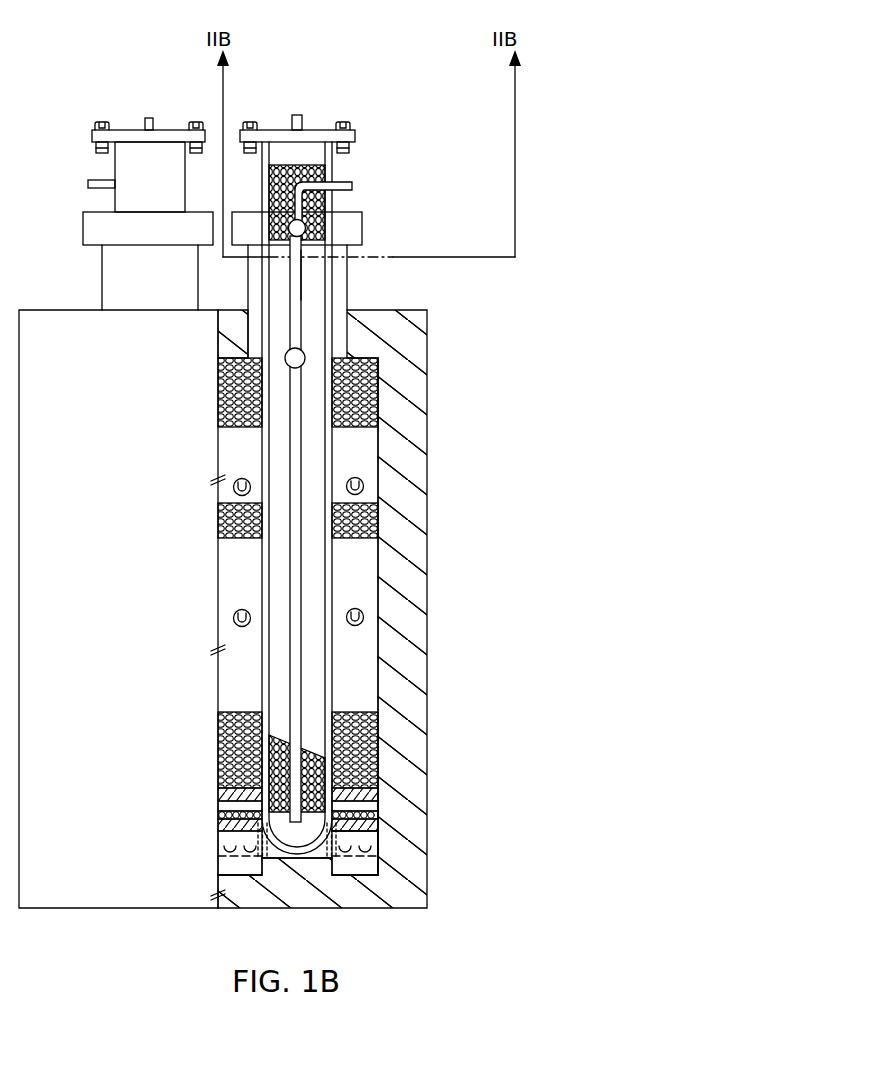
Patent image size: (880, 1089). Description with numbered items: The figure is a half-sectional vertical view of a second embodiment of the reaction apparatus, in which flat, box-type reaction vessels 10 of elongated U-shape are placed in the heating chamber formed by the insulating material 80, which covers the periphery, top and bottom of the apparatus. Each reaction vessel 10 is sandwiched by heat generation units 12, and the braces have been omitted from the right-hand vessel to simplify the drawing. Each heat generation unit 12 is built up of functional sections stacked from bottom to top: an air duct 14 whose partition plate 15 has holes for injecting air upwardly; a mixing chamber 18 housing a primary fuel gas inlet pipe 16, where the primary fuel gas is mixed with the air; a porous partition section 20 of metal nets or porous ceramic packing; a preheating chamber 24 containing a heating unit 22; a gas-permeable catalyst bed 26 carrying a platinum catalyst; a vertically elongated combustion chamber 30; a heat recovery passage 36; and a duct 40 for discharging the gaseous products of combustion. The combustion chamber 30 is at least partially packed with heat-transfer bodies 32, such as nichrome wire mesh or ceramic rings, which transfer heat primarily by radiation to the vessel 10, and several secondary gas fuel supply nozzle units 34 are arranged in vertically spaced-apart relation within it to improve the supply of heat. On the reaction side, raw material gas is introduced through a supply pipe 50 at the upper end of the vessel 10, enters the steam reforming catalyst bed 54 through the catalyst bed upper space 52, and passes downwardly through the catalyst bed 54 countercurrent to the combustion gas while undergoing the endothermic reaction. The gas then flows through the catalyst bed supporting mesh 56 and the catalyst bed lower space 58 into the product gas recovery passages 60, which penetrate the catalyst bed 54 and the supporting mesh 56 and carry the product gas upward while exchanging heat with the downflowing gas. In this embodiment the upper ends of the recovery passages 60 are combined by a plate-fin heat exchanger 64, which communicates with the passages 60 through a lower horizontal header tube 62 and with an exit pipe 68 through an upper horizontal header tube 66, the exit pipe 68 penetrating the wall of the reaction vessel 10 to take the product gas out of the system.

The reaction vessel 10 is at (333, 432).
The heat generation unit 12 is at (237, 573).
The air duct 14 is at (338, 860).
The partition plate 15 is at (227, 877).
The primary fuel gas inlet pipe 16 is at (370, 838).
The mixing chamber 18 is at (377, 838).
The porous partition section 20 is at (375, 824).
The heating unit 22 is at (375, 815).
The preheating chamber 24 is at (375, 805).
The gas-permeable catalyst bed 26 is at (372, 795).
The combustion chamber 30 is at (272, 683).
The heat-transfer bodies 32 is at (338, 372).
The secondary gas fuel supply nozzle unit 34 is at (233, 488).
The heat recovery passage 36 is at (348, 296).
The duct for discharging gaseous products of combustion 40 is at (362, 234).
The supply pipe 50 is at (304, 117).
The catalyst bed upper space 52 is at (297, 192).
The steam reforming catalyst bed 54 is at (315, 473).
The catalyst bed supporting mesh 56 is at (273, 862).
The catalyst bed lower space 58 is at (297, 788).
The product gas recovery passage 60 is at (301, 410).
The lower horizontal header tube 62 is at (304, 356).
The plate-fin heat exchanger 64 is at (302, 281).
The upper horizontal header tube 66 is at (300, 223).
The exit pipe 68 is at (350, 182).
The insulating material 80 is at (428, 381).